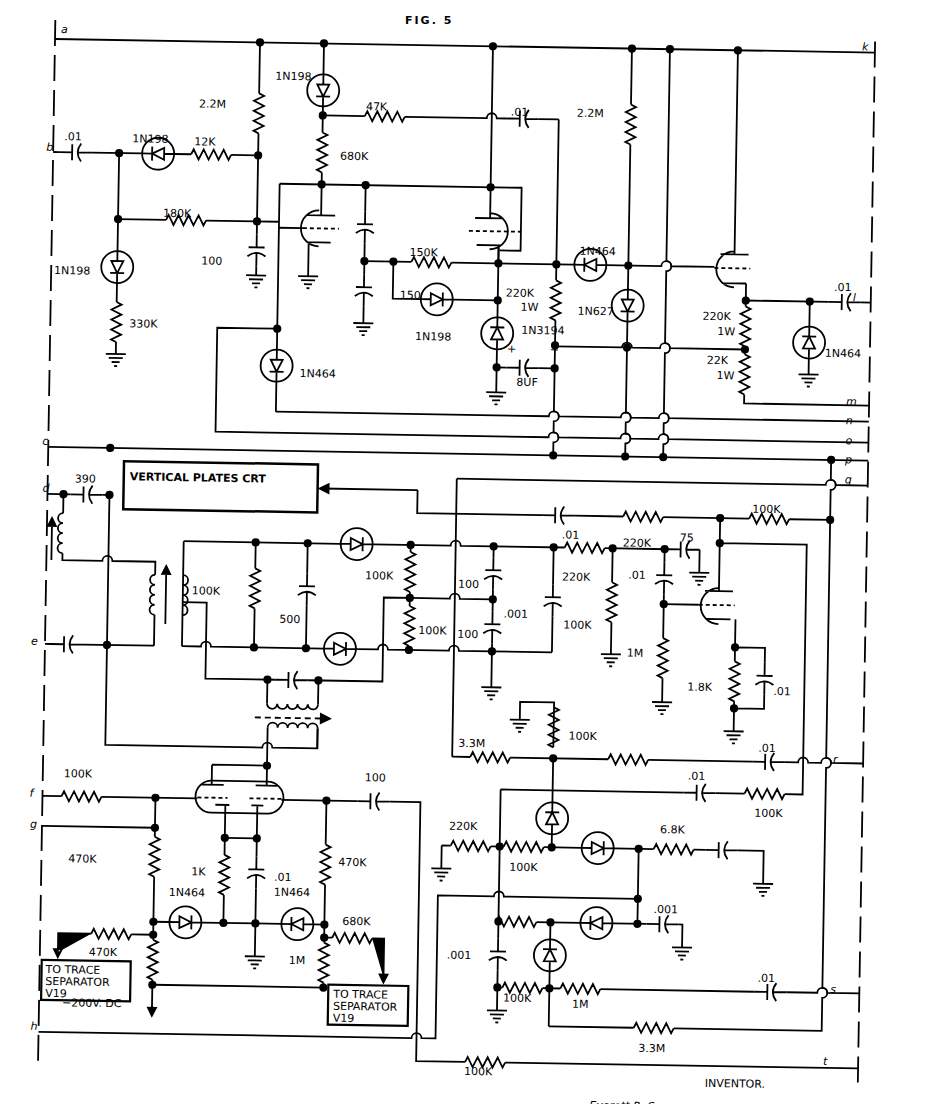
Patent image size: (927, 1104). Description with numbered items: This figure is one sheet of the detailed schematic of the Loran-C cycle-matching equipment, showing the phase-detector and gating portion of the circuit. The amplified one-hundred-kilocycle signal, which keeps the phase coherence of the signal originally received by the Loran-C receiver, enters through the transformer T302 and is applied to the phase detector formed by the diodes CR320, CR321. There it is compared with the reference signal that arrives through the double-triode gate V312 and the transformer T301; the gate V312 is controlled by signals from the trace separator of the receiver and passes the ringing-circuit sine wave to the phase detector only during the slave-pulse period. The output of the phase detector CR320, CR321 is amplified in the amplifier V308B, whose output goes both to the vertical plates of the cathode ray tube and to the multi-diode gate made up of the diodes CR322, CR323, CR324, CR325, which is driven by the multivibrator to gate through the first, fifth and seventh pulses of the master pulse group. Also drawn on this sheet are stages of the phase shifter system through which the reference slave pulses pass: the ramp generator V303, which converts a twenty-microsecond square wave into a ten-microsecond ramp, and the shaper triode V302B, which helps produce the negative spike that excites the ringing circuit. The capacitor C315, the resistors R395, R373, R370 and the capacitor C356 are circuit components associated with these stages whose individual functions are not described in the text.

The ramp generator V303 is at (400, 238).
The capacitor 150 C315 is at (387, 223).
The shaper V302B is at (755, 176).
The amplifier V308B is at (744, 604).
The transformer T302 is at (149, 605).
The transformer T301 is at (269, 718).
The phase detector diode CR320 is at (361, 526).
The phase detector diode CR321 is at (341, 635).
The double-triode gate V312 is at (254, 800).
The resistor 1M R395 is at (172, 960).
The resistor 1M R373 is at (618, 771).
The resistor 100K R370 is at (518, 911).
The gate diode CR322 is at (576, 815).
The gate diode CR323 is at (594, 859).
The gate diode CR324 is at (615, 934).
The gate diode CR325 is at (570, 953).
The capacitor C356 is at (720, 858).